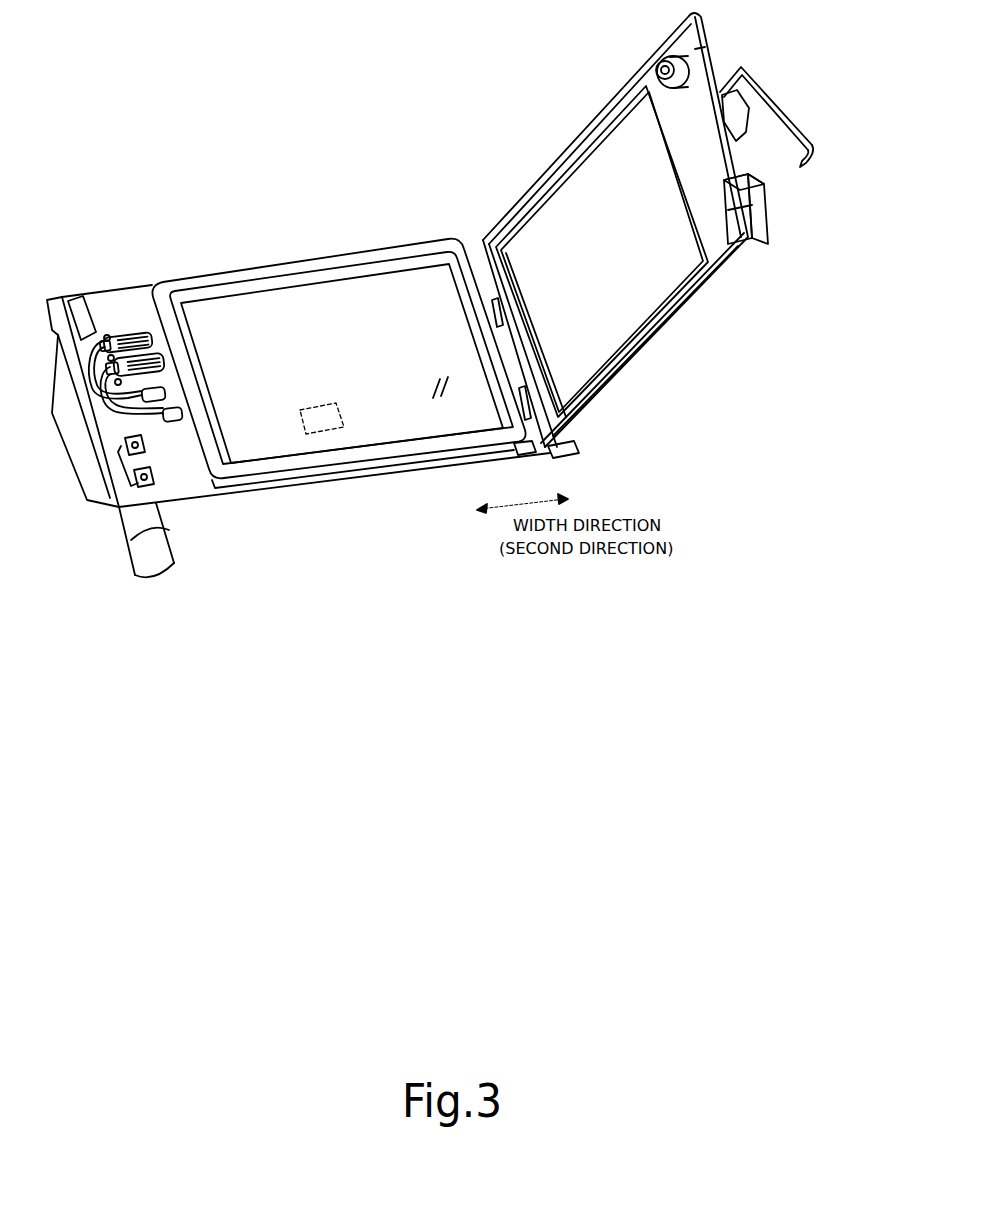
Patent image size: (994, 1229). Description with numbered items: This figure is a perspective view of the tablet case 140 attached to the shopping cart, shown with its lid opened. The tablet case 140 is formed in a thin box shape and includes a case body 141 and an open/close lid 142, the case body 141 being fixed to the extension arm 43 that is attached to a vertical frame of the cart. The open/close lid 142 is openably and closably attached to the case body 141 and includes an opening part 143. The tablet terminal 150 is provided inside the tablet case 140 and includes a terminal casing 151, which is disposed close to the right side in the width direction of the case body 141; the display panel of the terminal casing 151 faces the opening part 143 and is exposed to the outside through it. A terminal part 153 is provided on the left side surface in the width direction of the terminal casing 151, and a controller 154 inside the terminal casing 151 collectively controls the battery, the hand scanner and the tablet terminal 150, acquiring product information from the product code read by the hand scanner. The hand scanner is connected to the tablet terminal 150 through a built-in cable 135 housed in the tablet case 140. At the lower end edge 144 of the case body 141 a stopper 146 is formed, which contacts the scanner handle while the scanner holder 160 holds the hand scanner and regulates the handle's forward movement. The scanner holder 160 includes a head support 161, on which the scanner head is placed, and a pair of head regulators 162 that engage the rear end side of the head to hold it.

The extension arm 43 is at (153, 552).
The built-in cable 135 is at (130, 333).
The tablet case 140 is at (221, 500).
The case body 141 is at (311, 260).
The open/close lid 142 is at (535, 183).
The opening part 143 is at (630, 330).
The lower end edge 144 is at (683, 312).
The stopper 146 is at (737, 257).
The tablet terminal 150 is at (399, 416).
The terminal casing 151 is at (279, 467).
The terminal part 153 is at (146, 333).
The controller 154 is at (334, 434).
The scanner holder 160 is at (735, 95).
The head support 161 is at (742, 137).
The head regulators 162 is at (765, 88).